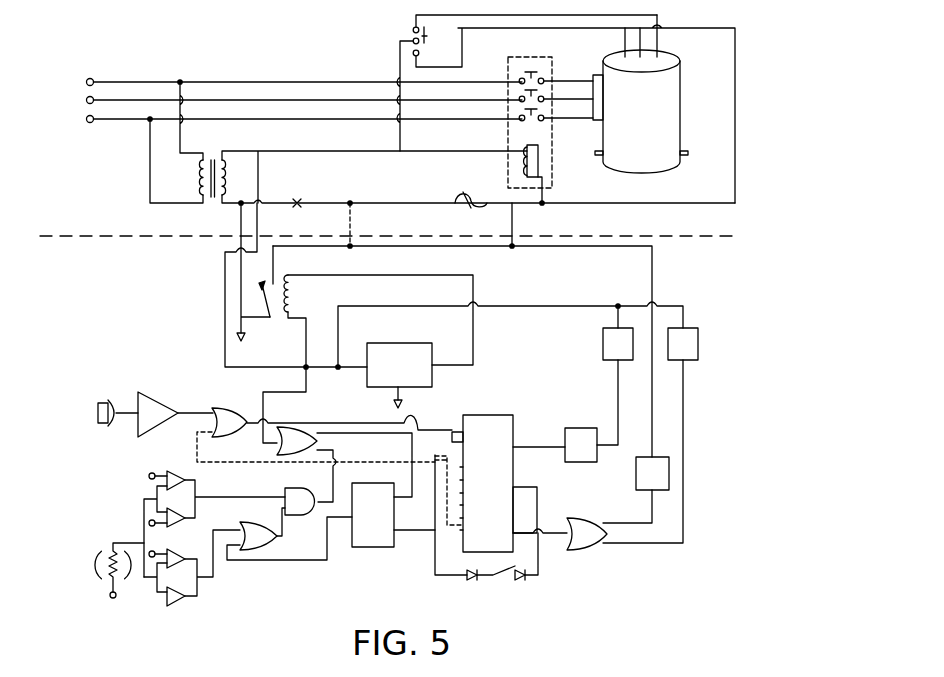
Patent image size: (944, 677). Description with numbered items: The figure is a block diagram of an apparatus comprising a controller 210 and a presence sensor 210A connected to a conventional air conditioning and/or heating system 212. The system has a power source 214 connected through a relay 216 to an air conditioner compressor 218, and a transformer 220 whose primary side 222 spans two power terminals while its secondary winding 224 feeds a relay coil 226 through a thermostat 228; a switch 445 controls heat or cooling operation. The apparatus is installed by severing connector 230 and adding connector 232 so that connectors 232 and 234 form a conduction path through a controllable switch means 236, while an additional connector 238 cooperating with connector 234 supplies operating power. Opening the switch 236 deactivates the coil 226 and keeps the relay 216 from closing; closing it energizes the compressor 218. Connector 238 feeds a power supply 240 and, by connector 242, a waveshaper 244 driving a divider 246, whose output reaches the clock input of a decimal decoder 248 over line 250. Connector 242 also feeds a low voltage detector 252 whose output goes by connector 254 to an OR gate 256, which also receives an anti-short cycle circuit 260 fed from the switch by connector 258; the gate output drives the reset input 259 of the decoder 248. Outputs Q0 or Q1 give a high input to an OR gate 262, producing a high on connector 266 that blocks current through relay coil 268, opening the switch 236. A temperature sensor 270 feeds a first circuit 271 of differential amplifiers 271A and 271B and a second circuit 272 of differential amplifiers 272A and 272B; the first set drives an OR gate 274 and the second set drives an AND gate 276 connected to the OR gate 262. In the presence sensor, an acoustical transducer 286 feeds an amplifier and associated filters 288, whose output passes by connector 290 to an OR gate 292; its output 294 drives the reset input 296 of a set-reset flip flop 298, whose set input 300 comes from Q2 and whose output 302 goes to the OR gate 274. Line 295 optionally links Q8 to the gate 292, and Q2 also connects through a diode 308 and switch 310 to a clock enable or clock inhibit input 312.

The controller 210 is at (192, 303).
The presence sensor 210A is at (115, 391).
The air conditioning and/or heating system 212 is at (236, 84).
The power source 214 is at (100, 74).
The relay 216 is at (522, 58).
The air conditioner compressor 218 is at (680, 118).
The transformer 220 is at (212, 158).
The primary side 222 is at (204, 175).
The secondary winding 224 is at (234, 178).
The relay coil 226 is at (540, 160).
The thermostat 228 is at (477, 176).
The connector 230 is at (300, 202).
The connector 232 is at (515, 222).
The connector 234 is at (239, 226).
The controllable switch means 236 is at (280, 284).
The connector 238 is at (225, 352).
The power supply 240 is at (423, 340).
The connector 242 is at (547, 305).
The waveshaper 244 is at (603, 344).
The divider 246 is at (600, 410).
The decimal decoder 248 is at (466, 412).
The line 250 is at (529, 447).
The low voltage detector 252 is at (699, 351).
The connector 254 is at (687, 435).
The OR gate 256 is at (582, 550).
The connector 258 is at (654, 290).
The reset input 259 is at (552, 530).
The anti-short cycle circuit 260 is at (636, 474).
The OR gate 262 is at (300, 427).
The connector 266 is at (305, 373).
The relay coil 268 is at (298, 301).
The temperature sensor 270 is at (96, 566).
The first circuit 271 is at (199, 587).
The differential amplifier 271A is at (188, 548).
The differential amplifier 271B is at (179, 602).
The second circuit 272 is at (162, 483).
The differential amplifier 272A is at (186, 474).
The differential amplifier 272B is at (186, 520).
The OR gate 274 is at (268, 542).
The AND gate 276 is at (319, 490).
The acoustical transducer 286 is at (98, 412).
The amplifier and associated filters 288 is at (148, 437).
The connector 290 is at (178, 411).
The OR gate 292 is at (229, 407).
The output 294 is at (255, 427).
The line 295 is at (393, 459).
The reset input 296 is at (399, 482).
The set-reset flip flop 298 is at (386, 547).
The set input 300 is at (413, 531).
The output 302 is at (337, 518).
The diode 308 is at (470, 581).
The switch 310 is at (517, 581).
The clock enable or clock inhibit input 312 is at (518, 486).
The switch 445 is at (409, 30).